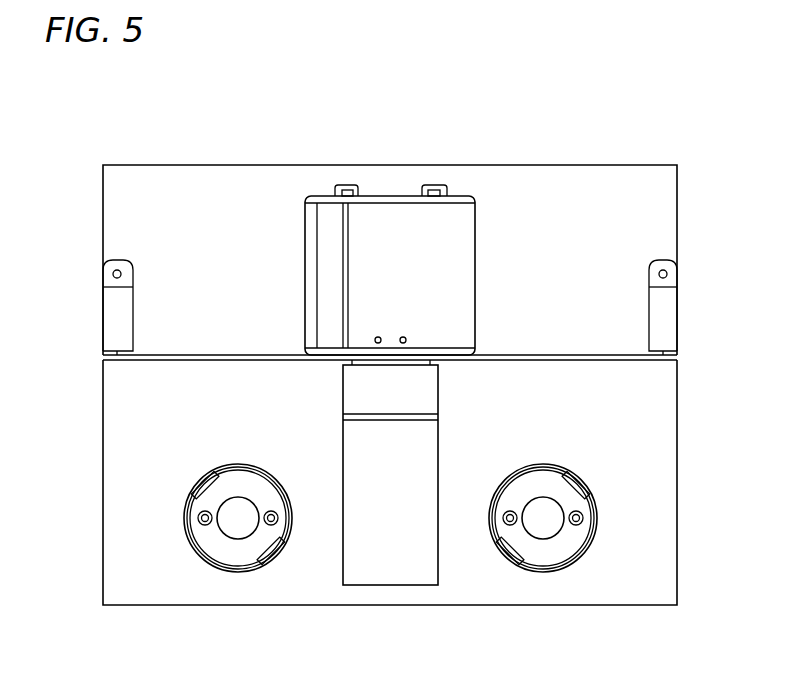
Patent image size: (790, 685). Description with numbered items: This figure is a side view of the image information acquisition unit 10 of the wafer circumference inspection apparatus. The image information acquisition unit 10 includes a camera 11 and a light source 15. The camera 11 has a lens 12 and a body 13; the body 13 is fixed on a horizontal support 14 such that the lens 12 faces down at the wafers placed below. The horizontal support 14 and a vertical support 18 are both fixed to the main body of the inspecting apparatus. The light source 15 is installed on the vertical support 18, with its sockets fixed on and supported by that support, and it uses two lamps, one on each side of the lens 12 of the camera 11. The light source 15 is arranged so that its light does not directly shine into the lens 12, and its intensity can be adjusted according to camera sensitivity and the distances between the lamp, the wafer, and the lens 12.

The image information acquisition unit 10 is at (458, 136).
The camera 11 is at (433, 243).
The lens 12 is at (389, 553).
The body 13 is at (405, 240).
The horizontal support 14 is at (530, 352).
The light source 15 is at (228, 466).
The vertical support 18 is at (173, 192).